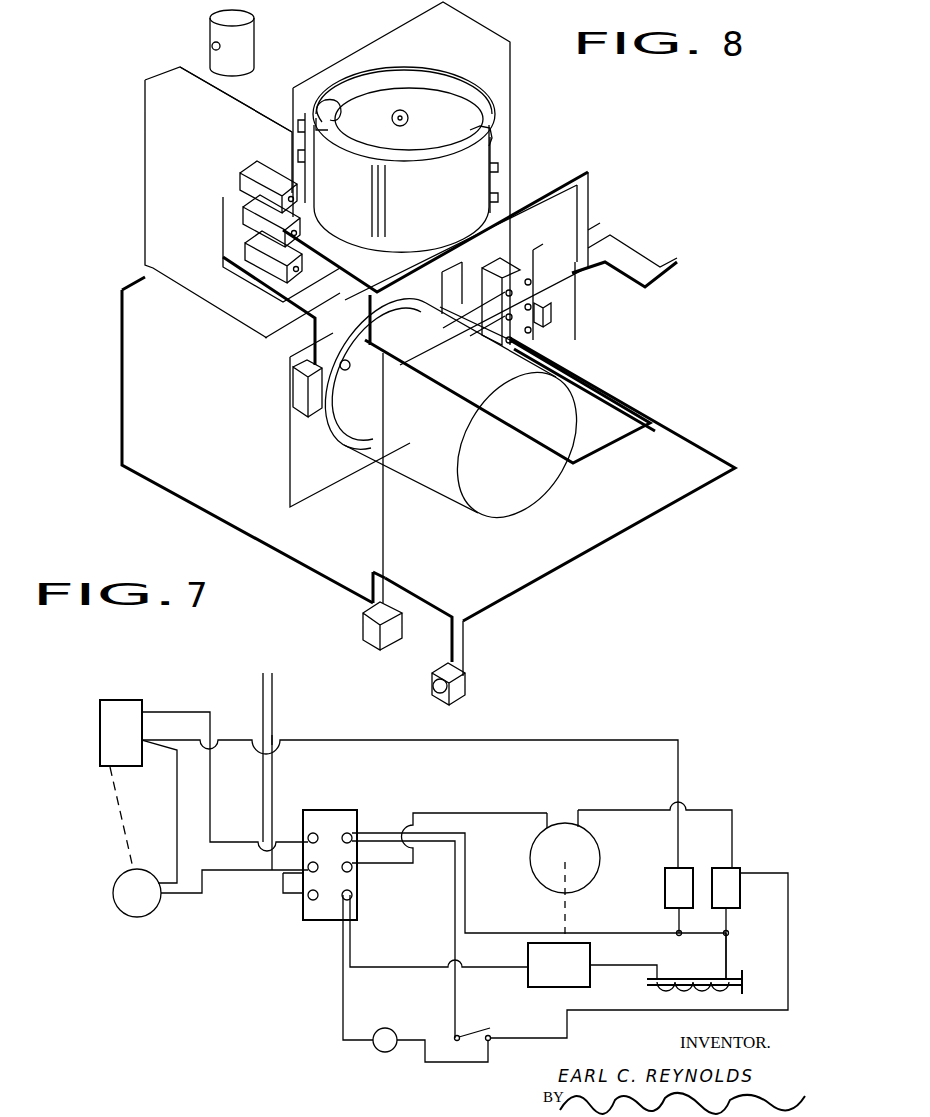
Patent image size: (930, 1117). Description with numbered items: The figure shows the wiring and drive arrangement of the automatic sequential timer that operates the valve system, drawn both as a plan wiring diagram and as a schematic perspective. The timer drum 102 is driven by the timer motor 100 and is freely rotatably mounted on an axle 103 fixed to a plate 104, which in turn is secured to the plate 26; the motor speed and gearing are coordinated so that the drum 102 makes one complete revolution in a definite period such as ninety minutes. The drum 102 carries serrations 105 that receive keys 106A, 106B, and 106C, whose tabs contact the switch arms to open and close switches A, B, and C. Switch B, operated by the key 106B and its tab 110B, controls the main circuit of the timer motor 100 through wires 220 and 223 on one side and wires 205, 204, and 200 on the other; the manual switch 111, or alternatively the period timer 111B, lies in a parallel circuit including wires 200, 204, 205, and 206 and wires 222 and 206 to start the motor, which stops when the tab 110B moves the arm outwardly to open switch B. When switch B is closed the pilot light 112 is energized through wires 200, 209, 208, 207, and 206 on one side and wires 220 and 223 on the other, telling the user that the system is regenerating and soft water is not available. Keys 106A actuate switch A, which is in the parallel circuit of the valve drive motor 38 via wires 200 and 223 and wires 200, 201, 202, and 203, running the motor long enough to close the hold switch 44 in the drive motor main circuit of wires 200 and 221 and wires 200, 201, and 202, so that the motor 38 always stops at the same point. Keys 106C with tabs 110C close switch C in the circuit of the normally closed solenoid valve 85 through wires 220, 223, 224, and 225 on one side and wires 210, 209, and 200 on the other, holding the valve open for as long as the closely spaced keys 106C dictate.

In FIG. 8, the plate 26 is at (337, 467).
In FIG. 8, the valve drive motor 38 is at (517, 475).
In FIG. 7, the valve drive motor 38 is at (135, 918).
In FIG. 8, the hold switch 44 is at (297, 413).
In FIG. 7, the hold switch 44 is at (108, 732).
In FIG. 8, the solenoid valve 85 is at (214, 44).
In FIG. 7, the solenoid valve 85 is at (684, 977).
In FIG. 8, the timer motor 100 is at (576, 172).
In FIG. 7, the timer motor 100 is at (592, 870).
In FIG. 8, the drum 102 is at (422, 221).
In FIG. 8, the axle 103 is at (398, 113).
In FIG. 8, the plate 104 is at (225, 278).
In FIG. 8, the serrations 105 is at (388, 175).
In FIG. 8, the keys 106A is at (327, 104).
In FIG. 8, the key 106B is at (320, 124).
In FIG. 8, the keys 106C is at (478, 131).
In FIG. 8, the tab 110B is at (312, 150).
In FIG. 8, the tab 110C is at (482, 208).
In FIG. 7, the manual switch 111 is at (472, 1034).
In FIG. 8, the period timer 111B is at (388, 637).
In FIG. 8, the pilot light 112 is at (460, 697).
In FIG. 7, the pilot light 112 is at (386, 1053).
In FIG. 8, the wire 200 is at (655, 283).
In FIG. 7, the wire 200 is at (261, 704).
In FIG. 8, the wire 201 is at (443, 302).
In FIG. 7, the wire 201 is at (213, 872).
In FIG. 8, the wire 202 is at (343, 327).
In FIG. 7, the wire 202 is at (176, 784).
In FIG. 8, the wire 203 is at (295, 330).
In FIG. 7, the wire 203 is at (566, 738).
In FIG. 8, the wire 204 is at (590, 228).
In FIG. 7, the wire 204 is at (500, 813).
In FIG. 8, the wire 205 is at (378, 288).
In FIG. 7, the wire 205 is at (708, 811).
In FIG. 8, the wire 206 is at (122, 420).
In FIG. 7, the wire 206 is at (672, 1014).
In FIG. 8, the wire 207 is at (440, 603).
In FIG. 7, the wire 207 is at (440, 1064).
In FIG. 7, the wire 208 is at (343, 987).
In FIG. 8, the wire 209 is at (552, 314).
In FIG. 7, the wire 209 is at (288, 898).
In FIG. 8, the wire 210 is at (597, 456).
In FIG. 7, the wire 210 is at (464, 966).
In FIG. 8, the wire 220 is at (649, 257).
In FIG. 7, the wire 220 is at (275, 731).
In FIG. 8, the wire 221 is at (363, 383).
In FIG. 7, the wire 221 is at (158, 712).
In FIG. 8, the wire 222 is at (386, 532).
In FIG. 7, the wire 222 is at (455, 912).
In FIG. 8, the wire 223 is at (512, 118).
In FIG. 7, the wire 223 is at (468, 923).
In FIG. 8, the wire 224 is at (236, 102).
In FIG. 7, the wire 224 is at (730, 966).
In FIG. 8, the wire 225 is at (145, 182).
In FIG. 7, the wire 225 is at (610, 967).
In FIG. 8, the switch A is at (256, 170).
In FIG. 7, the switch A is at (679, 900).
In FIG. 8, the switch B is at (241, 212).
In FIG. 7, the switch B is at (726, 900).
In FIG. 8, the switch C is at (273, 257).
In FIG. 7, the switch C is at (559, 965).